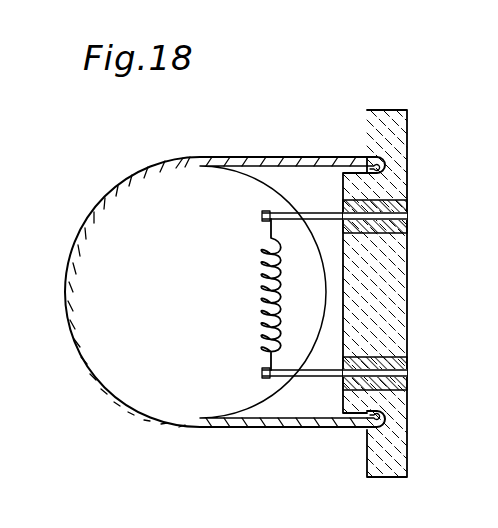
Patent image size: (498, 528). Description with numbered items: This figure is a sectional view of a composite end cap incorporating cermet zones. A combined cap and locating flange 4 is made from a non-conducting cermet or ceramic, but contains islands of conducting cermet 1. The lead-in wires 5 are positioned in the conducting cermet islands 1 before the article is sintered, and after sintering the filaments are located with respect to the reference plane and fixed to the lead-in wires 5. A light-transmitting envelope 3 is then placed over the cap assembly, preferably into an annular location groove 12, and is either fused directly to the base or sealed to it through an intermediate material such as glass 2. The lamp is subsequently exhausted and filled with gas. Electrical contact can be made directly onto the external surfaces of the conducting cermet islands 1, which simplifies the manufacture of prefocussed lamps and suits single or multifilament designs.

The conducting cermet islands 1 is at (407, 207).
The glass 2 is at (367, 158).
The light-transmitting envelope 3 is at (88, 369).
The combined cap and locating flange 4 is at (393, 137).
The lead-in wires 5 is at (316, 378).
The annular location groove 12 is at (388, 421).